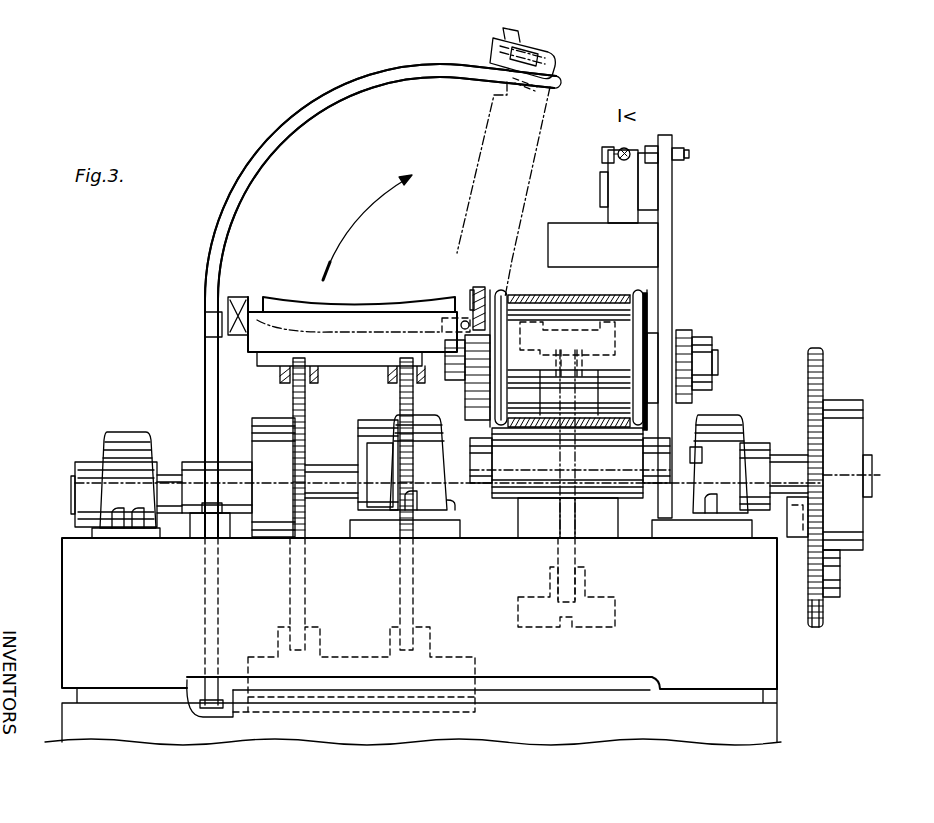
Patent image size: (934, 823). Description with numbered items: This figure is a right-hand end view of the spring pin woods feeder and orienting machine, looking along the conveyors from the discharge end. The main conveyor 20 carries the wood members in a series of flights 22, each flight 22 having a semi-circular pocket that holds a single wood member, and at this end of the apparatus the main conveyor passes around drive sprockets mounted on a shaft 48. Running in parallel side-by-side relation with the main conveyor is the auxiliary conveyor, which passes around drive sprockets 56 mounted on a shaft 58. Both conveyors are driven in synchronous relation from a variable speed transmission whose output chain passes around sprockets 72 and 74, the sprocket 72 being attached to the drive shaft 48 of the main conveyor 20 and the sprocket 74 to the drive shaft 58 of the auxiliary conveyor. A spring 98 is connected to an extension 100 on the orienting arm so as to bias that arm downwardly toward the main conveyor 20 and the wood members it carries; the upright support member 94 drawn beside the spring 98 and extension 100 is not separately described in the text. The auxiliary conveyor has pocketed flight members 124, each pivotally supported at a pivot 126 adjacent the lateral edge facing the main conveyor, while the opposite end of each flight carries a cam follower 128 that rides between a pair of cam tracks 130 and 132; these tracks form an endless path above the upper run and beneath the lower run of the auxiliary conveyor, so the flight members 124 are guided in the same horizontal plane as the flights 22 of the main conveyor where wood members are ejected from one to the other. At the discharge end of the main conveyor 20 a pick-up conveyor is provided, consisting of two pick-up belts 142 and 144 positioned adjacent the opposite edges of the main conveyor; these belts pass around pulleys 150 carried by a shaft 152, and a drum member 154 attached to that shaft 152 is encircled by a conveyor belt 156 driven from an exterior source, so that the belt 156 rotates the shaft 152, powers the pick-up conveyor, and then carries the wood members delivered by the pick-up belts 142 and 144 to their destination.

The main conveyor member 20 is at (640, 566).
The flight 22 is at (615, 612).
The shaft 48 is at (357, 473).
The drive sprockets 56 is at (400, 378).
The shaft 58 is at (72, 492).
The sprocket 72 is at (822, 360).
The sprocket 74 is at (826, 615).
The support plate 94 is at (637, 251).
The spring 98 is at (623, 150).
The extension 100 is at (620, 184).
The pocketed flight members 124 is at (258, 300).
The pivot 126 is at (463, 321).
The cam follower 128 is at (205, 324).
The cam track 130 is at (212, 248).
The cam track 132 is at (380, 301).
The pick-up belt 142 is at (642, 294).
The pick-up belt 144 is at (503, 292).
The pulleys 150 is at (492, 295).
The shaft 152 is at (712, 355).
The drum member 154 is at (613, 392).
The conveyor belt 156 is at (543, 295).